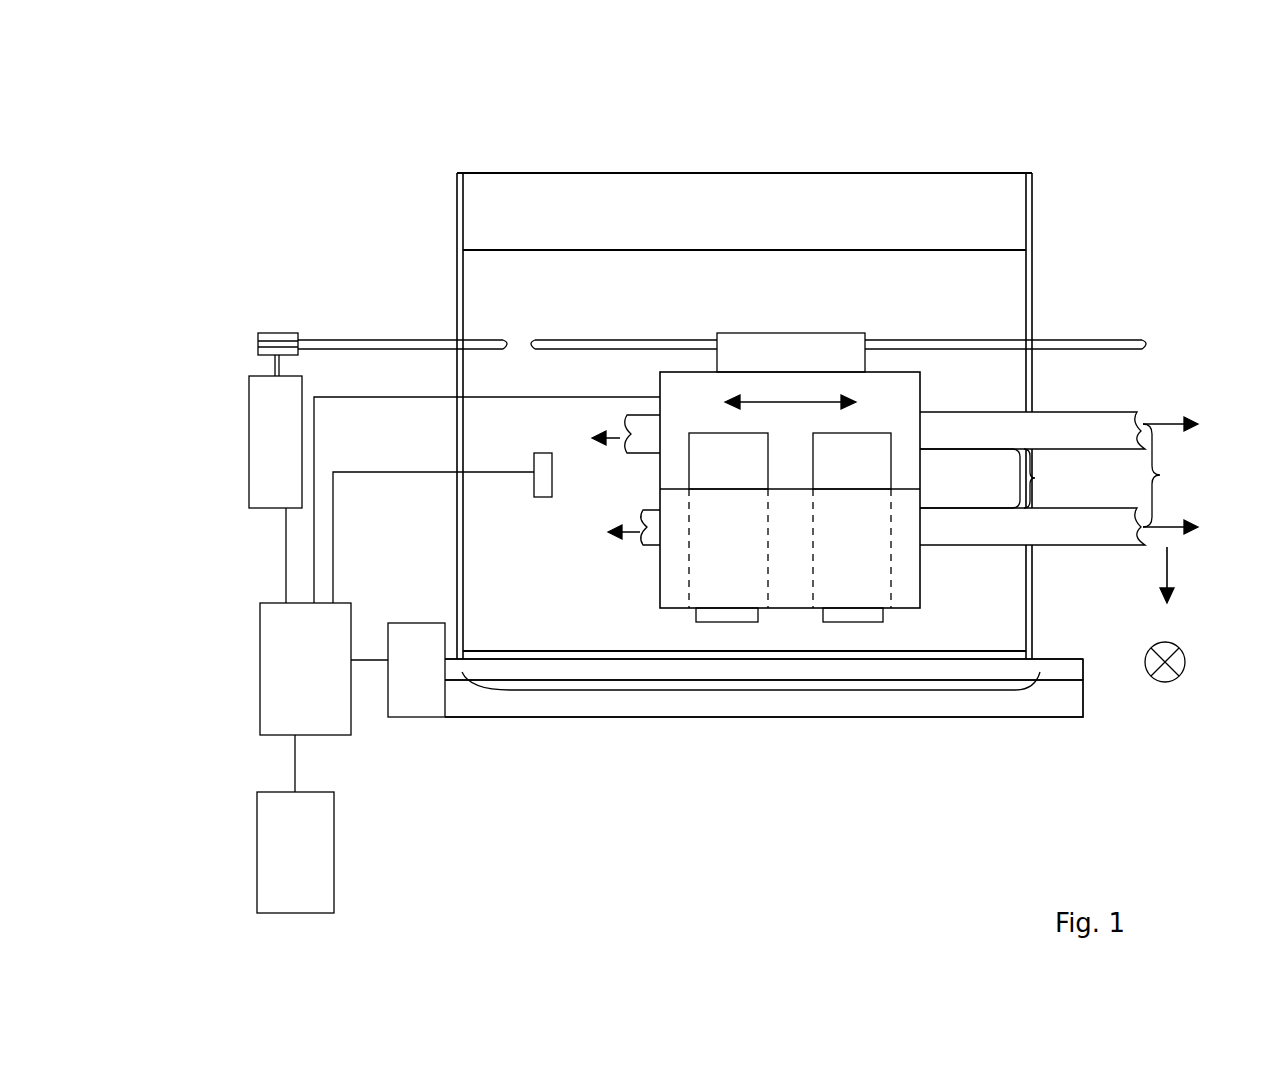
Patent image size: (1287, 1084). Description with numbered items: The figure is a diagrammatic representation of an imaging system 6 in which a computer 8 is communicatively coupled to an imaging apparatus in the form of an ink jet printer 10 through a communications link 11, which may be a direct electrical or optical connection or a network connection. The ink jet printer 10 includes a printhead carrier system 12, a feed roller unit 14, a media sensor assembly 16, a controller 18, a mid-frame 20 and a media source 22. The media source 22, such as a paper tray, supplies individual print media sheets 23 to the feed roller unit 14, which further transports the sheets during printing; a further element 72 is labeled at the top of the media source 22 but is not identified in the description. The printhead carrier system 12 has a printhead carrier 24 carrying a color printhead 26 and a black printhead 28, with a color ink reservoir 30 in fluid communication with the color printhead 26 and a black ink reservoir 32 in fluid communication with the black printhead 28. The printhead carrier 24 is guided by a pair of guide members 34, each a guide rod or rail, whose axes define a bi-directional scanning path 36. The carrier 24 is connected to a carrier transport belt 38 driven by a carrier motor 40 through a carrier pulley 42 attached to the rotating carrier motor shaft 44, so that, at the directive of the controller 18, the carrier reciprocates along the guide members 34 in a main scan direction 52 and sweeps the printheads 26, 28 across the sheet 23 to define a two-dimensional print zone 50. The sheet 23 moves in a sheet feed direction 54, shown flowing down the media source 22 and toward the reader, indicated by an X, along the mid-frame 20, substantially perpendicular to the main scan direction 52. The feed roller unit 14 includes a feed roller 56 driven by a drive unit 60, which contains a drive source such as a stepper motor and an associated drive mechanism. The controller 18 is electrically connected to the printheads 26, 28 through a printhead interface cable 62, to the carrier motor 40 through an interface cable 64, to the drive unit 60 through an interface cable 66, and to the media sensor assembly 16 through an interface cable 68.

The imaging system 6 is at (330, 160).
The computer 8 is at (295, 852).
The ink jet printer 10 is at (880, 140).
The communications link 11 is at (295, 760).
The printhead carrier system 12 is at (848, 258).
The feed roller unit 14 is at (484, 762).
The media sensor assembly 16 is at (534, 485).
The controller 18 is at (305, 669).
The mid-frame 20 is at (1088, 668).
The media source 22 is at (556, 130).
The print media sheets 23 is at (632, 250).
The printhead carrier 24 is at (920, 482).
The color printhead 26 is at (706, 626).
The black printhead 28 is at (862, 622).
The color ink reservoir 30 is at (712, 433).
The black ink reservoir 32 is at (870, 433).
The guide members 34 is at (1048, 478).
The bi-directional scanning path 36 is at (620, 440).
The carrier transport belt 38 is at (368, 340).
The carrier motor 40 is at (249, 486).
The carrier pulley 42 is at (272, 333).
The carrier motor shaft 44 is at (270, 365).
The print zone 50 is at (748, 690).
The main scan direction 52 is at (775, 395).
The sheet feed direction 54 is at (1172, 568).
The feed roller 56 is at (587, 710).
The drive unit 60 is at (416, 670).
The printhead interface cable 62 is at (314, 460).
The interface cable 64 is at (286, 580).
The interface cable 66 is at (363, 667).
The interface cable 68 is at (333, 542).
The chamber wall 72 is at (505, 173).